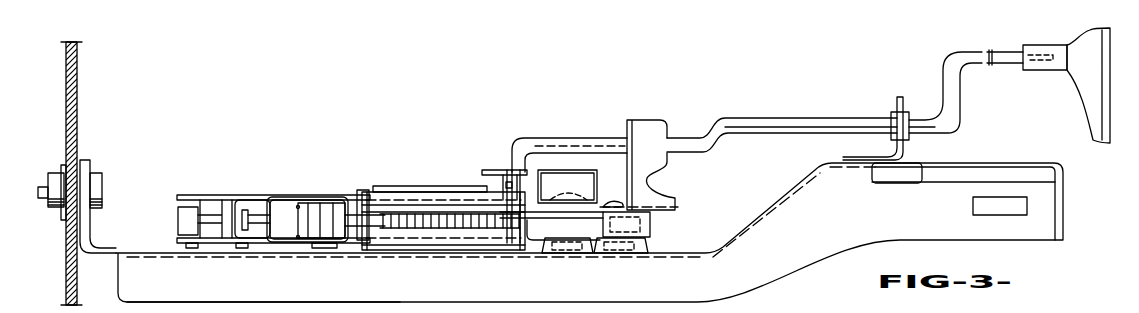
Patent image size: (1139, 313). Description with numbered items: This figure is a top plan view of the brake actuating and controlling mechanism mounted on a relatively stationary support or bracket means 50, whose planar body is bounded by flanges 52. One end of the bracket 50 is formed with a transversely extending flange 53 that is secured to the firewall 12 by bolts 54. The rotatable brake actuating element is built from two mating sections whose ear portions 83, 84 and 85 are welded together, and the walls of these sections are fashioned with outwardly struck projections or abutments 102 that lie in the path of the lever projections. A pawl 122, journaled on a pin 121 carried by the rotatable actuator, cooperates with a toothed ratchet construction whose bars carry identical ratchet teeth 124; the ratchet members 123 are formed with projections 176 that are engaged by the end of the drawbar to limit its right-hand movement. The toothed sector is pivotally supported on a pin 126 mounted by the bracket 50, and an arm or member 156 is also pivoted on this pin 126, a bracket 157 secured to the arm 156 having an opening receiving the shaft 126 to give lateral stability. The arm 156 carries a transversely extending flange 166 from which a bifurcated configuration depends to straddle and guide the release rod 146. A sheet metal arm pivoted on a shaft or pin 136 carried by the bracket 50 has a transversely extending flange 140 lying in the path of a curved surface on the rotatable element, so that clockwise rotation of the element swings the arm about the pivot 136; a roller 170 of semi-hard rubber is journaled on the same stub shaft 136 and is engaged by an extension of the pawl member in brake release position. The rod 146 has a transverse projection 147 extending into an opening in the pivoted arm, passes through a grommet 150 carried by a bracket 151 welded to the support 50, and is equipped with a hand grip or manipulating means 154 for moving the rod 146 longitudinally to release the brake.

The firewall 12 is at (76, 100).
The bolts 54 is at (103, 192).
The transversely extending flange 53 is at (91, 235).
The flanges 52 is at (223, 293).
The support or bracket means 50 is at (707, 244).
The ear portion 84 is at (209, 207).
The ear portion 85 is at (263, 207).
The pawl 122 is at (303, 207).
The pin 121 is at (325, 210).
The ear portion 83 is at (366, 198).
The members of the ratchet component 123 is at (423, 213).
The struck up projections or abutments 102 is at (468, 177).
The ratchet teeth 124 is at (410, 230).
The transversely extending flange 140 is at (497, 182).
The transverse projection 147 is at (532, 139).
The roller 170 is at (545, 172).
The transversely extending flange 166 is at (627, 165).
The projections 176 is at (624, 191).
The arm or member 156 is at (689, 209).
The bracket 157 is at (650, 227).
The shaft or pin 136 is at (557, 240).
The pin 126 is at (623, 243).
The rod 146 is at (758, 122).
The bracket 151 is at (897, 100).
The grommet 150 is at (909, 142).
The hand grip or manipulating means 154 is at (1087, 108).